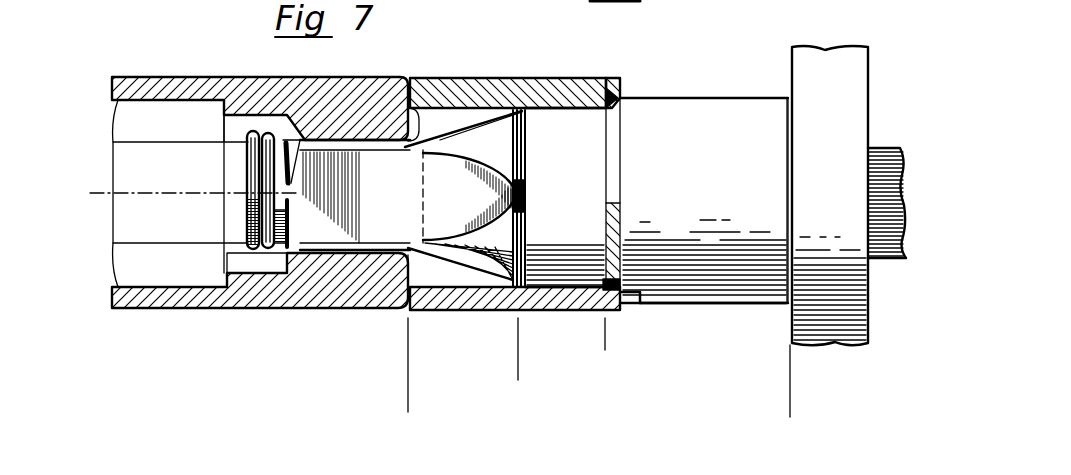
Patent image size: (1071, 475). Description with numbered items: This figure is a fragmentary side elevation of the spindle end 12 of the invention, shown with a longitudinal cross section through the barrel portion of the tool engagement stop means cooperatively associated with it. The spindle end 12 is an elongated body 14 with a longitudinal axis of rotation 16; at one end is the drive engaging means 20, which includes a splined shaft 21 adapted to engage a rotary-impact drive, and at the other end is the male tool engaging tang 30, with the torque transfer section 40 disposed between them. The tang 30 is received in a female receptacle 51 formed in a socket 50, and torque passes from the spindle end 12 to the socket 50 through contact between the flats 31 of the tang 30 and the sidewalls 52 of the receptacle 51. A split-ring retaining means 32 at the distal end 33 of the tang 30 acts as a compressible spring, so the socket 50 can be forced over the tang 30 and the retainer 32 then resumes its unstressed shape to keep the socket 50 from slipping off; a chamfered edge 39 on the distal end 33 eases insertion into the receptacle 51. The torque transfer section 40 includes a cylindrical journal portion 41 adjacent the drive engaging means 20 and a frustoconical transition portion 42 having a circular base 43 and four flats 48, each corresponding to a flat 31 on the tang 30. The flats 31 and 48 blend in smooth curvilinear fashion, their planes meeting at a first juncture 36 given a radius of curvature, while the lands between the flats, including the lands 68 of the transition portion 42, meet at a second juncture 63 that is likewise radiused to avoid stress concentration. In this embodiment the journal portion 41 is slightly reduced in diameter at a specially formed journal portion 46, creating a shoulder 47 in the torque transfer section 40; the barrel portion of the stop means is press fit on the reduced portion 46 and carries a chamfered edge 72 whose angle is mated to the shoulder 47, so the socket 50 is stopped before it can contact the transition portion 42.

The spindle end 12 is at (688, 78).
The elongated body 14 is at (700, 307).
The longitudinal axis of rotation 16 is at (152, 191).
The drive engaging means 20 is at (798, 372).
The splined shaft 21 is at (888, 258).
The male tool engaging tang 30 is at (246, 183).
The flats 31 is at (353, 138).
The retaining means 32 is at (228, 260).
The distal end 33 is at (250, 134).
The first juncture 36 is at (424, 197).
The chamfered edge 39 is at (246, 218).
The torque transfer section 40 is at (408, 397).
The cylindrical journal portion 41 is at (521, 366).
The transition portion 42 is at (408, 365).
The circular base 43 is at (532, 137).
The reduced-diameter journal portion 46 is at (521, 337).
The shoulder 47 is at (613, 107).
The flats 48 is at (478, 122).
The socket 50 is at (277, 79).
The female receptacle 51 is at (417, 140).
The sidewalls 52 is at (317, 255).
The second juncture 63 is at (413, 255).
The lands 68 is at (493, 132).
The chamfered edge 72 is at (640, 297).